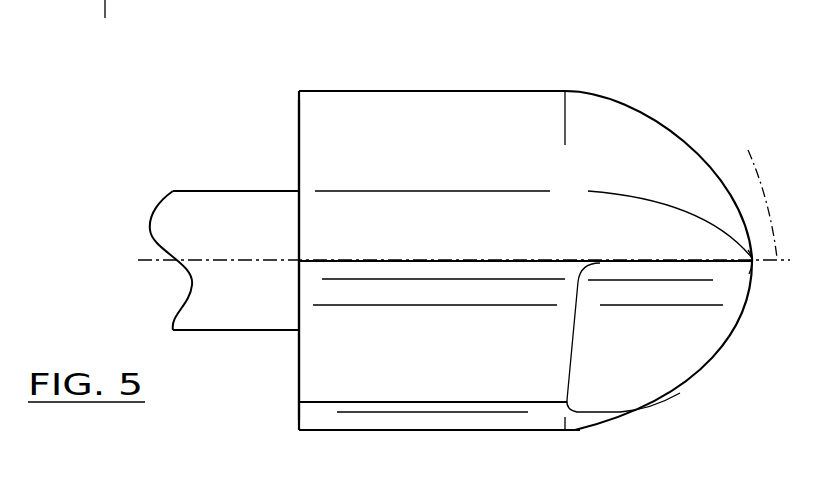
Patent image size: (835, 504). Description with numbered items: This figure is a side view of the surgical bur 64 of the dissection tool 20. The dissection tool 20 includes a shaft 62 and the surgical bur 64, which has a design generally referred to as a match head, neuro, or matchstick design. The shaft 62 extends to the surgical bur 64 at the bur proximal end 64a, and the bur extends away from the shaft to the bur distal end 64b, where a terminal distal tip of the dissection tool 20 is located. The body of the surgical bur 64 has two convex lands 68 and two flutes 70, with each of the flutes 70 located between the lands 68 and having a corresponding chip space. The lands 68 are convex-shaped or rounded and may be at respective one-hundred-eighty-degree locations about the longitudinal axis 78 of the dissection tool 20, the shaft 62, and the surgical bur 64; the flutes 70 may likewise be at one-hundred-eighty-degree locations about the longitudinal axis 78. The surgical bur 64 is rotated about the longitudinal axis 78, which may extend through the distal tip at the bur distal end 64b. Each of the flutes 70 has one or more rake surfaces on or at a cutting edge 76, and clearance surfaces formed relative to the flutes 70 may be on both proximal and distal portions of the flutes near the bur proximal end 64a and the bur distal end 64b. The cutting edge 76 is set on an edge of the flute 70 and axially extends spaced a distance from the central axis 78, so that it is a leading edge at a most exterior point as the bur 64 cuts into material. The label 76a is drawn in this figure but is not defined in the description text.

The dissection tool 20 is at (670, 37).
The shaft 62 is at (193, 229).
The surgical bur 64 is at (540, 68).
The bur proximal end 64a is at (290, 124).
The bur distal end 64b is at (757, 272).
The land 68 is at (340, 130).
The flute 70 is at (348, 350).
The cutting edge 76 is at (333, 260).
The channel inlet 76a is at (37, 0).
The longitudinal axis 78 is at (758, 192).